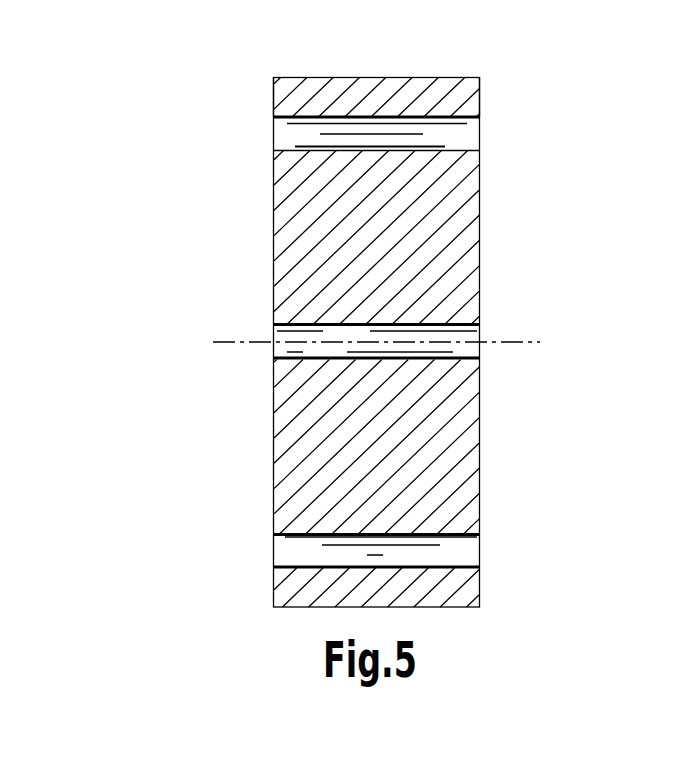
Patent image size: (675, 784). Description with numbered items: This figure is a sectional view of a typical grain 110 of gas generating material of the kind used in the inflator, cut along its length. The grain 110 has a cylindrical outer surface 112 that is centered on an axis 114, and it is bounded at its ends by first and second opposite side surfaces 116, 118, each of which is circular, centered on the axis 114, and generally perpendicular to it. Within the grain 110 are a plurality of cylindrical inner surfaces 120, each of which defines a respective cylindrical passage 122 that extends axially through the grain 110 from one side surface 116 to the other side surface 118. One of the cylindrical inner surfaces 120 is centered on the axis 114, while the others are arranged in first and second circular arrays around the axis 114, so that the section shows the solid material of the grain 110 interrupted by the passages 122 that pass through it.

The grain 110 is at (129, 101).
The cylindrical outer surface 112 is at (378, 77).
The axis 114 is at (220, 342).
The first side surface 116 is at (273, 93).
The second side surface 118 is at (481, 100).
The cylindrical inner surface 120 is at (297, 148).
The cylindrical passage 122 is at (256, 128).